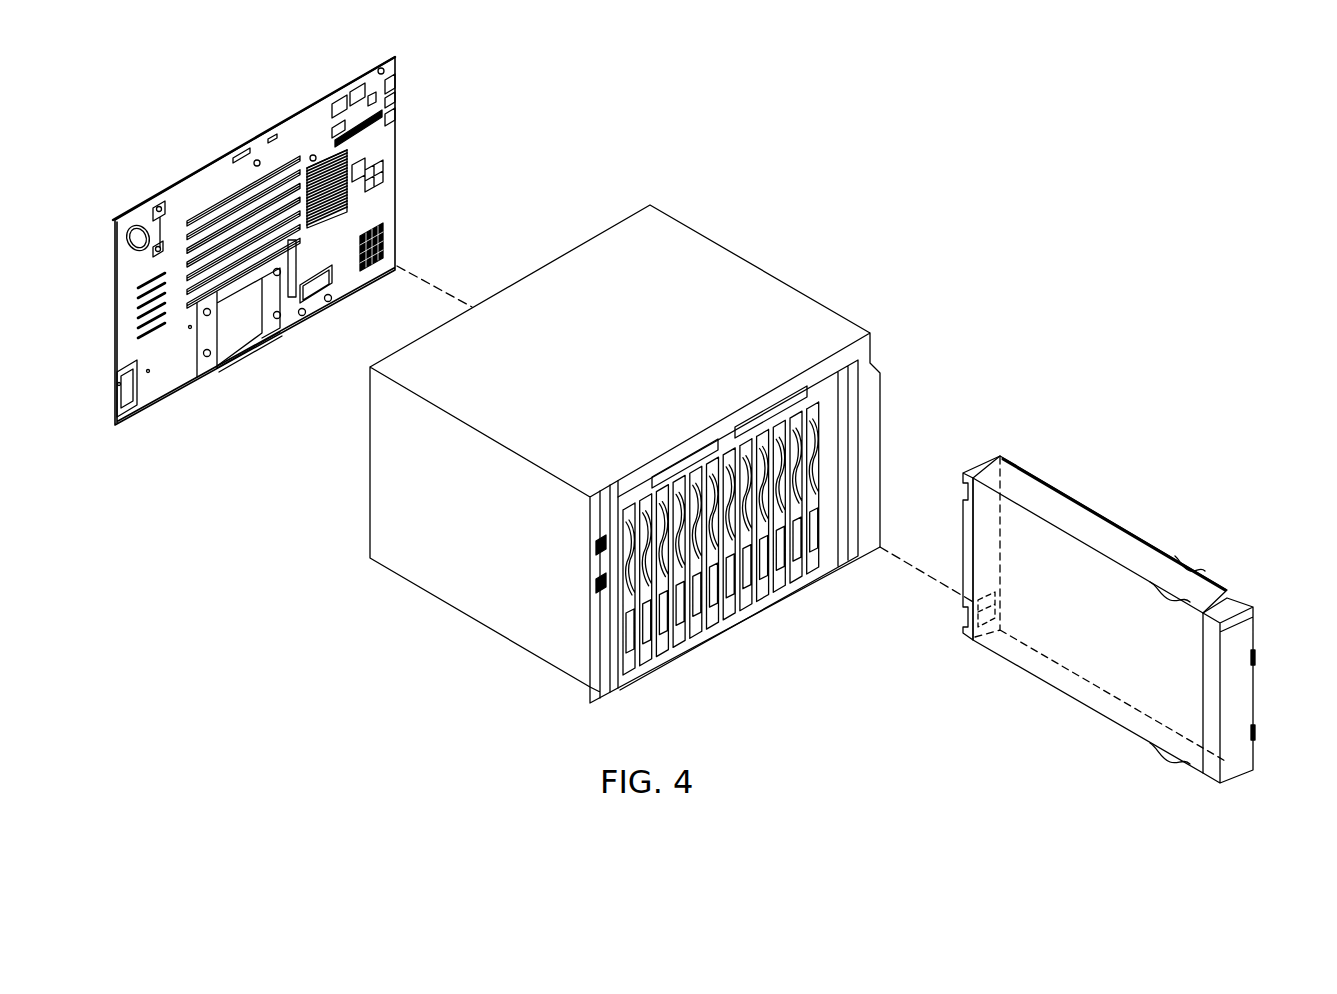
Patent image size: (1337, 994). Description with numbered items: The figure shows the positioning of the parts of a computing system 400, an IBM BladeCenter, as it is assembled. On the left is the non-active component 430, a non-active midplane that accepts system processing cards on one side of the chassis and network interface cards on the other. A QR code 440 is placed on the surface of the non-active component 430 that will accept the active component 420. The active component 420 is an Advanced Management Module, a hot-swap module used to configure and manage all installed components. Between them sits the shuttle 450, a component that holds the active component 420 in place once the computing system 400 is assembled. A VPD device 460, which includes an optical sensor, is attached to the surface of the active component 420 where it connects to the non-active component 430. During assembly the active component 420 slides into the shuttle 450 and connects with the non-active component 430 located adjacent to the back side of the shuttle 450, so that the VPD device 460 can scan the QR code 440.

The computing system 400 is at (1008, 142).
The active component 420 is at (1088, 525).
The non-active component 430 is at (367, 72).
The QR code 440 is at (377, 224).
The shuttle 450 is at (740, 256).
The VPD device 460 is at (985, 611).